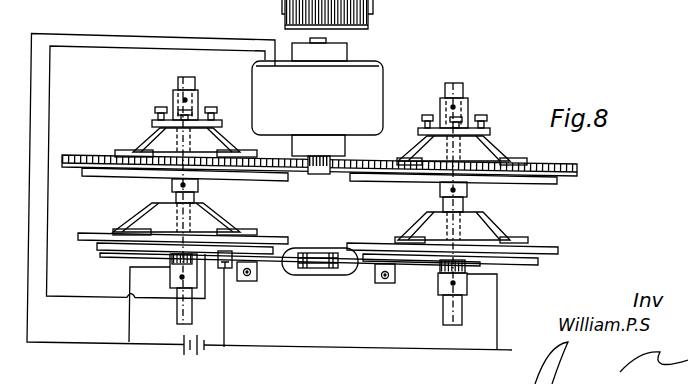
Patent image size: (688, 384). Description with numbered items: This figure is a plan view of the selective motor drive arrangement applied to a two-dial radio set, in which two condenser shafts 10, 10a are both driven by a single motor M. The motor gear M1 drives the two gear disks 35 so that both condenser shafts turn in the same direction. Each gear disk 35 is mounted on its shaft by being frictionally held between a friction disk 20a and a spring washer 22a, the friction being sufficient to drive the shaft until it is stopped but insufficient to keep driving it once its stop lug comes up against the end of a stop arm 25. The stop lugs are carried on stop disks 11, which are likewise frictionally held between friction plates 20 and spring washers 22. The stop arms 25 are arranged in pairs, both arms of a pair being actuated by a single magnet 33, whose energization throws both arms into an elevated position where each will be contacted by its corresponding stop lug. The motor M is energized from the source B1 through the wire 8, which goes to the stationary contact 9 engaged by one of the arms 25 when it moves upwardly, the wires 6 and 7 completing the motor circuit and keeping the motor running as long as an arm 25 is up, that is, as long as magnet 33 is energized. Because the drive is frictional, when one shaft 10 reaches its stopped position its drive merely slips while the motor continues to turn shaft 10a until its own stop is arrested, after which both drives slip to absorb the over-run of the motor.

The wire 6 is at (29, 313).
The wire 7 is at (106, 298).
The wire 8 is at (226, 326).
The stationary contact 9 is at (226, 270).
The condenser shaft 10 is at (190, 87).
The condenser shaft 10a is at (465, 93).
The stop disk 11 is at (83, 243).
The friction plate 20 is at (115, 253).
The friction disk 20a is at (114, 171).
The spring washer 22 is at (143, 214).
The spring washer 22a is at (156, 138).
The stop arm 25 is at (262, 270).
The magnet 33 is at (349, 274).
The gear disk 35 is at (81, 154).
The motor M is at (317, 78).
The motor gear M1 is at (344, 163).
The source B1 is at (193, 356).